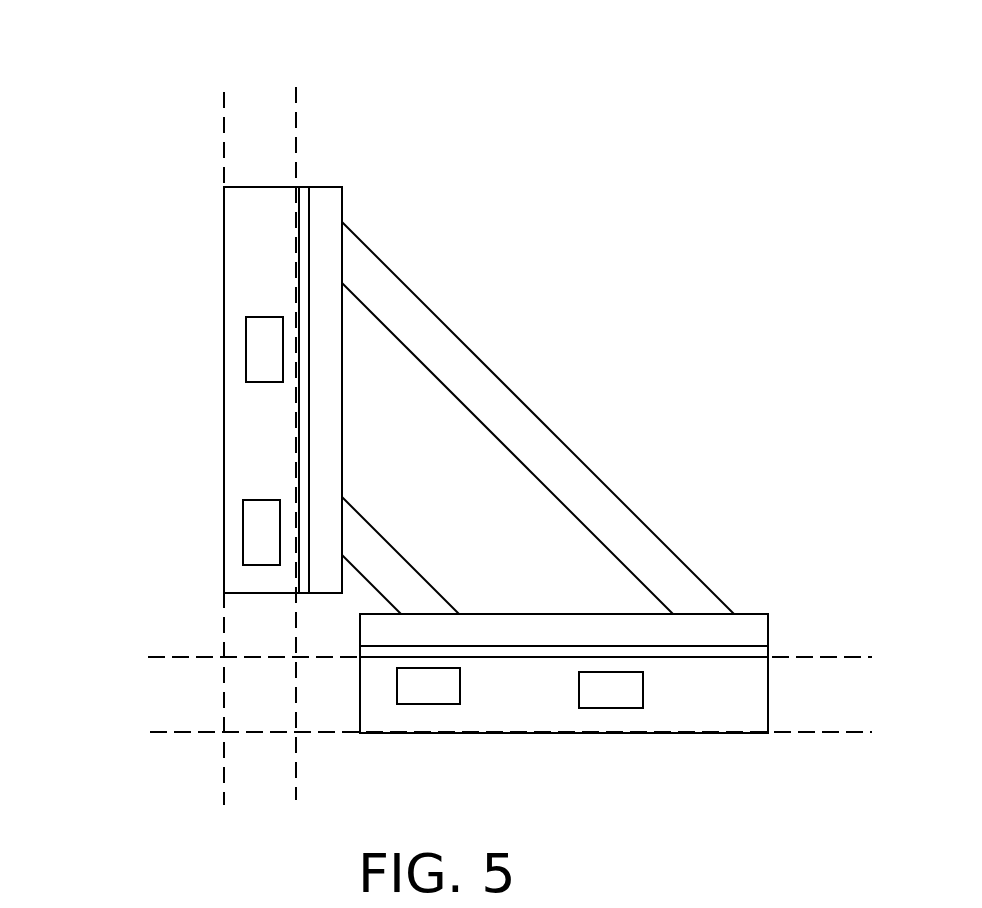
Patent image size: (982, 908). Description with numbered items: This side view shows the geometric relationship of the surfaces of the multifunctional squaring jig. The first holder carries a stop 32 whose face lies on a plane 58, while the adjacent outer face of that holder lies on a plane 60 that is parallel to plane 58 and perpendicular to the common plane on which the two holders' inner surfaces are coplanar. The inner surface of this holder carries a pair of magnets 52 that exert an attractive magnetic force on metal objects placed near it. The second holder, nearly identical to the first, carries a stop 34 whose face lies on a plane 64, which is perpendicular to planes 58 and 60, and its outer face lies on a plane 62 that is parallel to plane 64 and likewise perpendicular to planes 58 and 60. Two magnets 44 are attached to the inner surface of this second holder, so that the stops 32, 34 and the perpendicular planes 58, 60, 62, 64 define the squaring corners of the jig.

The stop 32 is at (309, 255).
The stop 34 is at (723, 646).
The magnets 44 is at (520, 746).
The magnets 52 is at (186, 427).
The plane 58 is at (297, 118).
The plane 60 is at (223, 118).
The plane 62 is at (150, 657).
The plane 64 is at (150, 731).